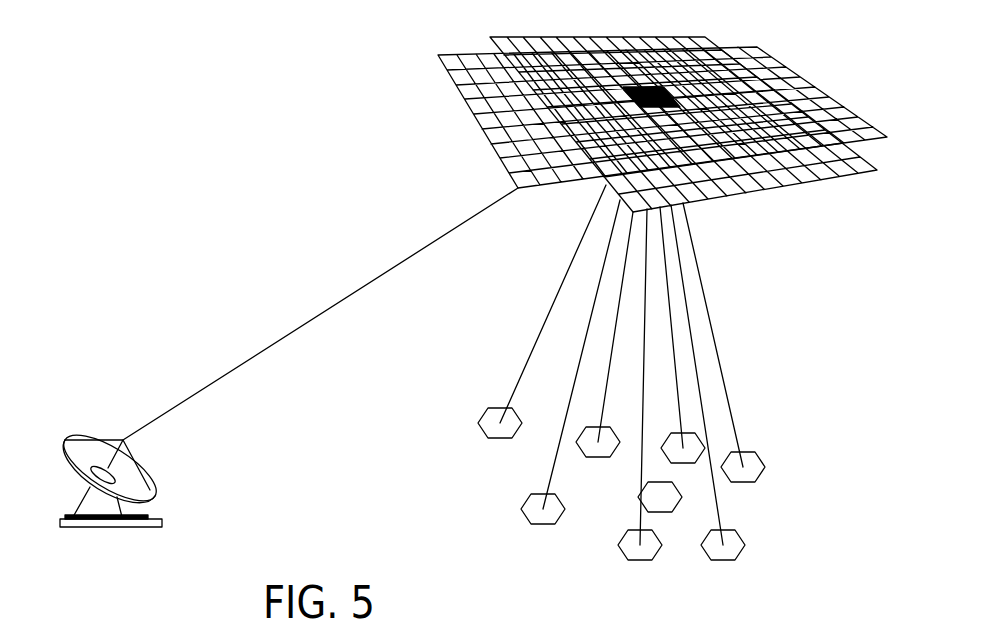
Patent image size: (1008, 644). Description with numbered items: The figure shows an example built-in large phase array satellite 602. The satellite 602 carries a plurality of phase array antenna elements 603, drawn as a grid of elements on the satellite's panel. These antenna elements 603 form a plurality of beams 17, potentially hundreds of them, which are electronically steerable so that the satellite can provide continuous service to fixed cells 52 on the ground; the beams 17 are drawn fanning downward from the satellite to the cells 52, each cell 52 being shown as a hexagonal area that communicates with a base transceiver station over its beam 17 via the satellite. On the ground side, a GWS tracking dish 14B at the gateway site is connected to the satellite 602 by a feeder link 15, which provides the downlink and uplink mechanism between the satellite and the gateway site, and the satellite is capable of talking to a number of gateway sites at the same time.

The large phase array satellite 602 is at (482, 34).
The phase array antenna elements 603 is at (483, 113).
The GWS tracking dish 14B is at (108, 440).
The feeder link 15 is at (320, 315).
The beams 17 is at (708, 309).
The cells 52 is at (747, 481).